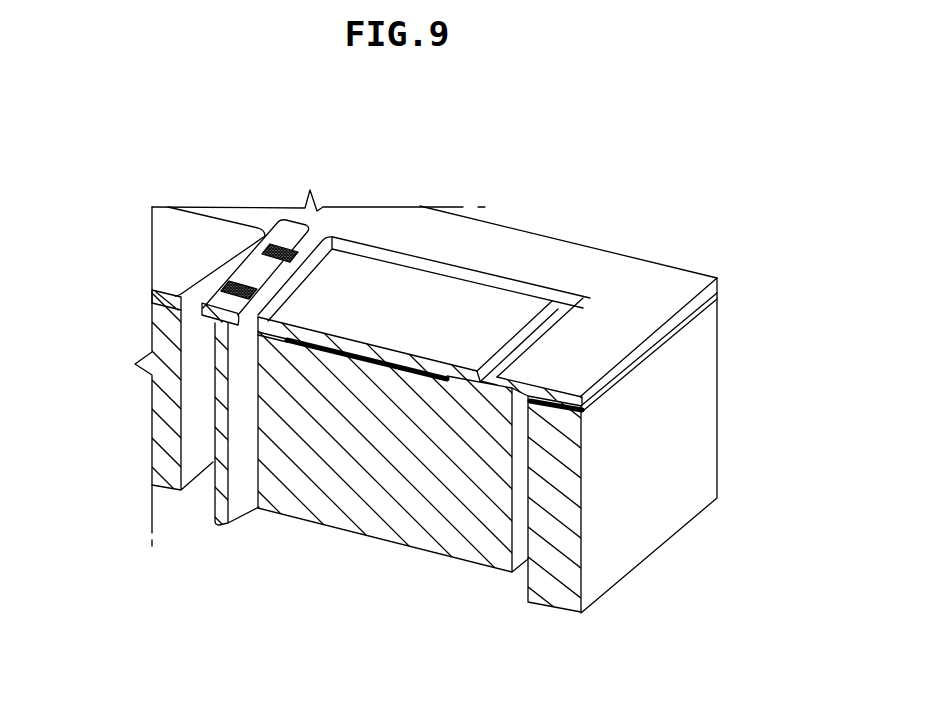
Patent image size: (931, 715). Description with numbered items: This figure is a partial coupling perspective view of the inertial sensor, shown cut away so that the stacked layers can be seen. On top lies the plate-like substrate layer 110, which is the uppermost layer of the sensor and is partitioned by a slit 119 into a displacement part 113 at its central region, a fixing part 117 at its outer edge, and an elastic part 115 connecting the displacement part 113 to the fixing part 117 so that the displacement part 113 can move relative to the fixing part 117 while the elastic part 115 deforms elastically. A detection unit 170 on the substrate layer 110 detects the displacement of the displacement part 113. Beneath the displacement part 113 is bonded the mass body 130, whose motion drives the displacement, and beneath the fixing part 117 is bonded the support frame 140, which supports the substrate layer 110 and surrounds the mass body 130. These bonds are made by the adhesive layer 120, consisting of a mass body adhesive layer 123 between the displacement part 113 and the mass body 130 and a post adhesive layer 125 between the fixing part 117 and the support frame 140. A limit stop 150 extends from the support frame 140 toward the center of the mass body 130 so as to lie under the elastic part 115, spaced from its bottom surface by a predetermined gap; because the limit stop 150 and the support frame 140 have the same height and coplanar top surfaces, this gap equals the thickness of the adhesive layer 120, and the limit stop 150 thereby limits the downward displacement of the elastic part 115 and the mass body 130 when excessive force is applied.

The substrate layer 110 is at (460, 142).
The displacement part 113 is at (360, 289).
The elastic part 115 is at (266, 273).
The fixing part 117 is at (443, 234).
The slit 119 is at (547, 295).
The adhesive layer 120 is at (434, 504).
The mass body adhesive layer 123 is at (393, 375).
The post adhesive layer 125 is at (557, 405).
The mass body 130 is at (326, 498).
The support frame 140 is at (557, 587).
The limit stop 150 is at (218, 488).
The detection unit 170 is at (230, 291).